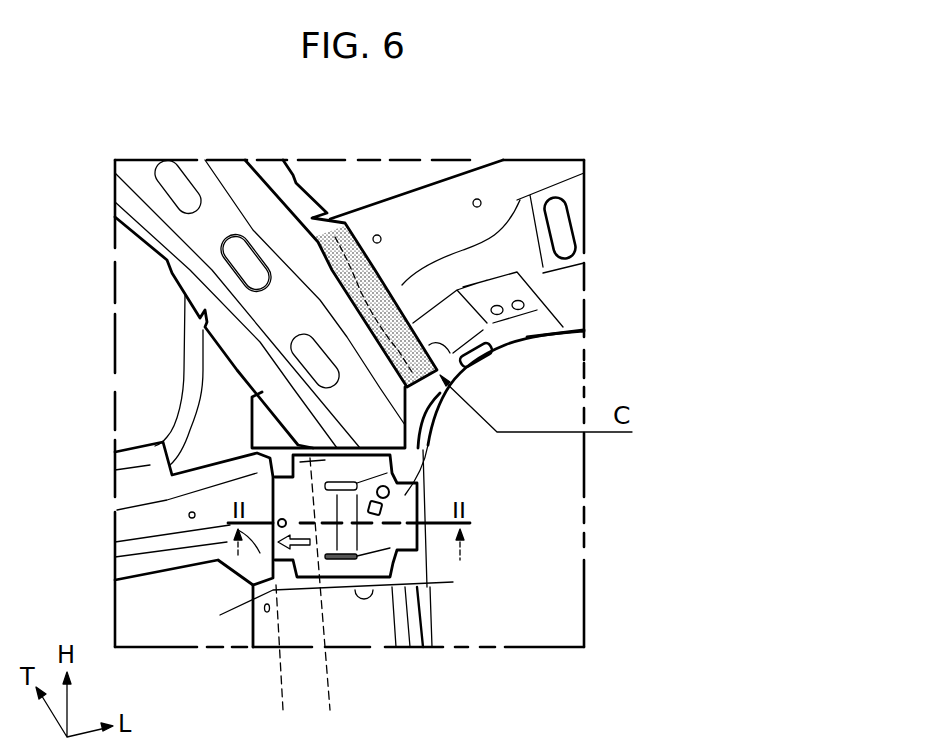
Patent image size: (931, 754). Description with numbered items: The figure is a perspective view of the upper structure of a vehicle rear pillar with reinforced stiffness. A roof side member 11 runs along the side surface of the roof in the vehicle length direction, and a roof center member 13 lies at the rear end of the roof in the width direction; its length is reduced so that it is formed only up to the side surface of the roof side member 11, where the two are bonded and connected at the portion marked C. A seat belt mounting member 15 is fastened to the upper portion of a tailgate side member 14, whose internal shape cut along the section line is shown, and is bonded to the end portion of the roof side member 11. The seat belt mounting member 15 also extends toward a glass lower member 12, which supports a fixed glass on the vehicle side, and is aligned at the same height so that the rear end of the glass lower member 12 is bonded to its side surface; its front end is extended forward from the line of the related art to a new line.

The roof side member 11 is at (231, 203).
The glass lower member 12 is at (135, 524).
The roof center member 13 is at (434, 217).
The tailgate side member 14 is at (372, 622).
The seat belt mounting member 15 is at (410, 470).